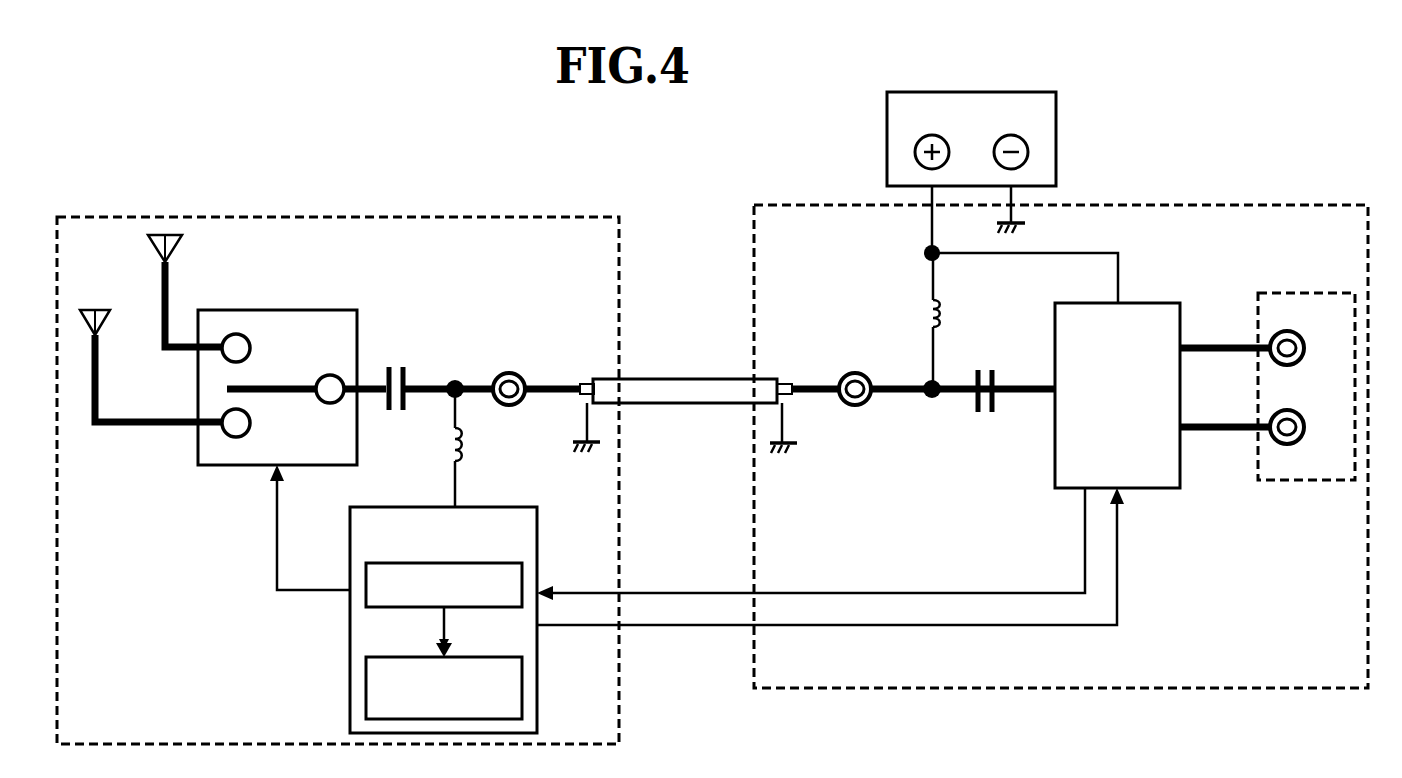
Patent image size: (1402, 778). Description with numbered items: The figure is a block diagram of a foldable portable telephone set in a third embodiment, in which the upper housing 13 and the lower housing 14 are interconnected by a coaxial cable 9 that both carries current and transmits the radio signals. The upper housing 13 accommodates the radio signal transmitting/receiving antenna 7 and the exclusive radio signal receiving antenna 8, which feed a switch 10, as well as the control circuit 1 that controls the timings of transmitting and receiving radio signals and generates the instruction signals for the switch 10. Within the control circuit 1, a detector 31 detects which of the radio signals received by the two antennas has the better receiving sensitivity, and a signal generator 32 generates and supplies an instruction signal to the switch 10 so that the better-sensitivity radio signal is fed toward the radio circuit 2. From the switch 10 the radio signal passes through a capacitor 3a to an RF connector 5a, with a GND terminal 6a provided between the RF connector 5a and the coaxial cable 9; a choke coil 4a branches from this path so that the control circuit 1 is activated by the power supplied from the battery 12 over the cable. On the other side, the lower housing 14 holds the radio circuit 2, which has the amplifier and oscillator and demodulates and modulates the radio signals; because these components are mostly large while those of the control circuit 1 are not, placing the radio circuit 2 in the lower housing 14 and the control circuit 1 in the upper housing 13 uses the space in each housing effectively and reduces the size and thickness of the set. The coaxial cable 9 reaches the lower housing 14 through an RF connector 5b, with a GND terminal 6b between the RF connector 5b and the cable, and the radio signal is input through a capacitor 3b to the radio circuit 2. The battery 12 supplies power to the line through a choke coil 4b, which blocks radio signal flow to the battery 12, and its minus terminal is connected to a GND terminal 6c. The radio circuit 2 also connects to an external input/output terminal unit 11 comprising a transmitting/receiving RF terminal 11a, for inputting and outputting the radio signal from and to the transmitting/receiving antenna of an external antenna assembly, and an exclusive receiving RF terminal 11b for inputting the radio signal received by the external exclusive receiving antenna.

The control circuit 1 is at (697, 599).
The radio circuit 2 is at (1153, 302).
The capacitor 3a is at (405, 367).
The capacitor 3b is at (980, 370).
The choke coil 4a is at (449, 442).
The choke coil 4b is at (920, 304).
The RF connector 5a is at (509, 373).
The RF connector 5b is at (866, 401).
The GND terminal 6a is at (574, 442).
The GND terminal 6b is at (797, 443).
The GND terminal 6c is at (1025, 224).
The transmitting/receiving antenna 7 is at (108, 328).
The exclusive receiving antenna 8 is at (173, 250).
The coaxial cable 9 is at (700, 405).
The switch 10 is at (257, 312).
The external input/output terminal unit 11 is at (1267, 369).
The transmitting/receiving RF terminal 11a is at (1297, 362).
The exclusive receiving RF terminal 11b is at (1297, 443).
The battery 12 is at (1056, 153).
The upper housing 13 is at (521, 217).
The lower housing 14 is at (1255, 205).
The detector 31 is at (420, 607).
The signal generator 32 is at (470, 657).